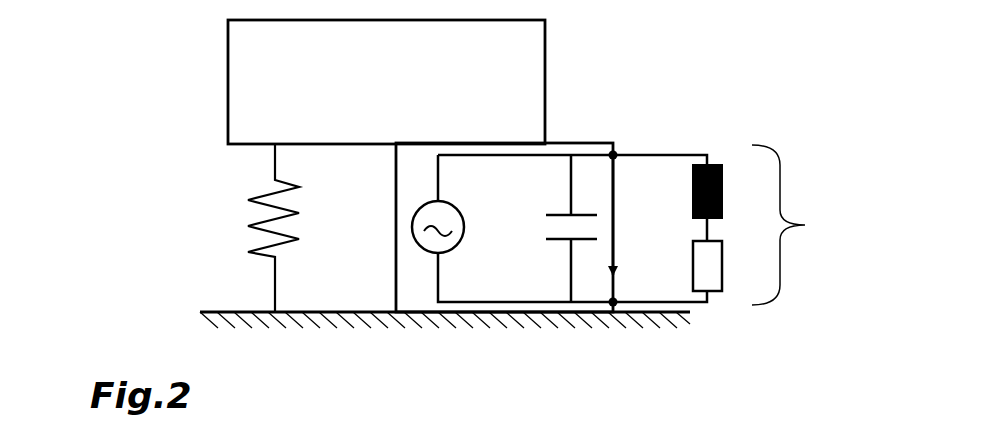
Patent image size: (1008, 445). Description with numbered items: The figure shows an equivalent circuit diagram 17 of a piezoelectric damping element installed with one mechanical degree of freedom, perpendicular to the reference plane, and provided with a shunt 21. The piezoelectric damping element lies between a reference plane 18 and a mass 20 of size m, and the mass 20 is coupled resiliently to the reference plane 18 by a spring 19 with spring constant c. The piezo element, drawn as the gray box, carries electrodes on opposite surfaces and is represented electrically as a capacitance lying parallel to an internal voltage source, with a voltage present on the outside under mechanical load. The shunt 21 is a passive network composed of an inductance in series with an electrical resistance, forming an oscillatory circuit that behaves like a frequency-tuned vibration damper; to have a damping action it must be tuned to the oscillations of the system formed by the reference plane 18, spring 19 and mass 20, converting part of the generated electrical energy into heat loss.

The equivalent circuit diagram 17 is at (645, 93).
The reference plane 18 is at (200, 312).
The spring 19 is at (250, 188).
The mass 20 is at (247, 65).
The shunt 21 is at (719, 310).